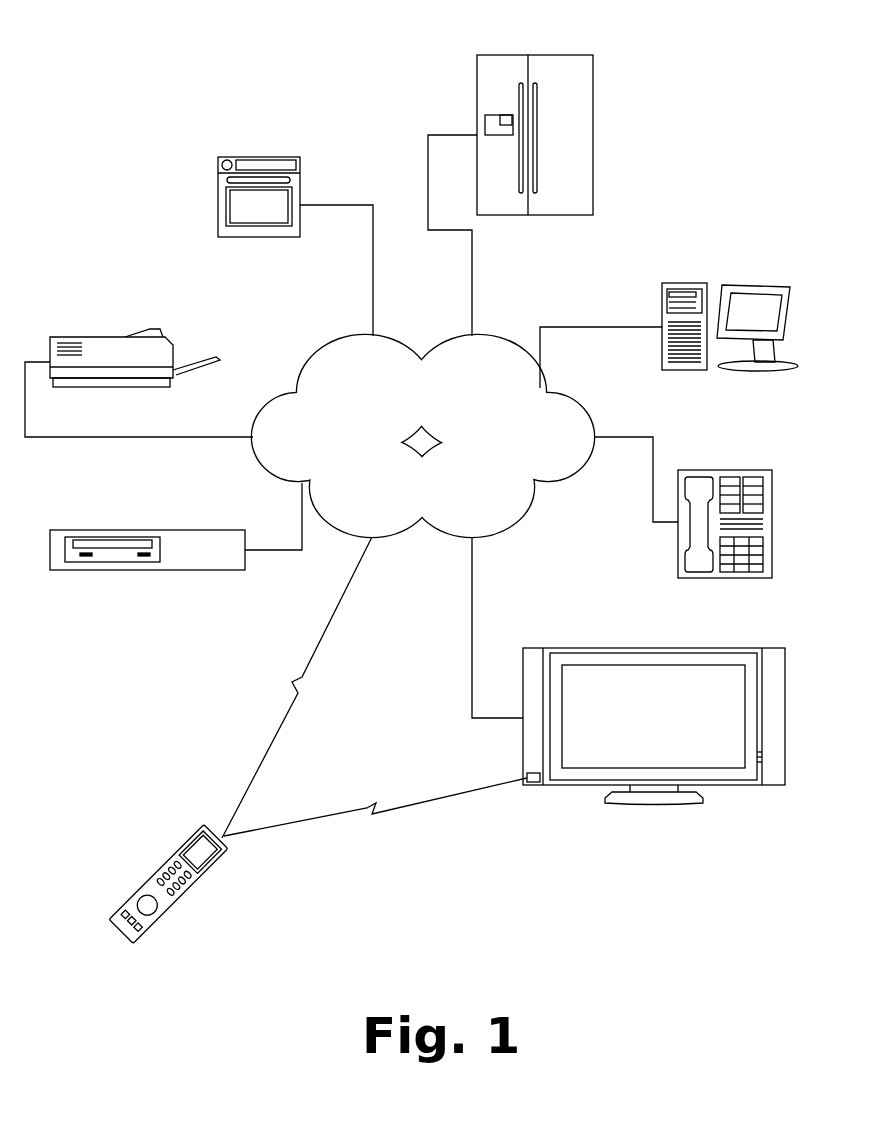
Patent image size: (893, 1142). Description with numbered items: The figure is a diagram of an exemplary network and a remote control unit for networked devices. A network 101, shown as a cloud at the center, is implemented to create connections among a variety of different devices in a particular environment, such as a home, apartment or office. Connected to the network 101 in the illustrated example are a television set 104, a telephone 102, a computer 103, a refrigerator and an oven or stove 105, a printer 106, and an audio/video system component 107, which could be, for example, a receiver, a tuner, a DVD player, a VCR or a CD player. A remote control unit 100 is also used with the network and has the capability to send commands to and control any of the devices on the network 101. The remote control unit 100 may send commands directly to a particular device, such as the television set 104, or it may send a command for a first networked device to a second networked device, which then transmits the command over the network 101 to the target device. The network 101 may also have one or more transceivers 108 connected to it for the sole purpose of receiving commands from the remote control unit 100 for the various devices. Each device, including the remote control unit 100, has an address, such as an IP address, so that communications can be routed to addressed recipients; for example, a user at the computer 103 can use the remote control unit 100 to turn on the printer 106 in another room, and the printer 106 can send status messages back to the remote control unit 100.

The remote control unit 100 is at (165, 860).
The network 101 is at (423, 436).
The telephone 102 is at (740, 562).
The computer 103 is at (724, 390).
The television set 104 is at (712, 737).
The refrigerator and oven or stove 105 is at (243, 163).
The printer 106 is at (120, 352).
The audio/video system component 107 is at (110, 568).
The transceiver 108 is at (371, 540).